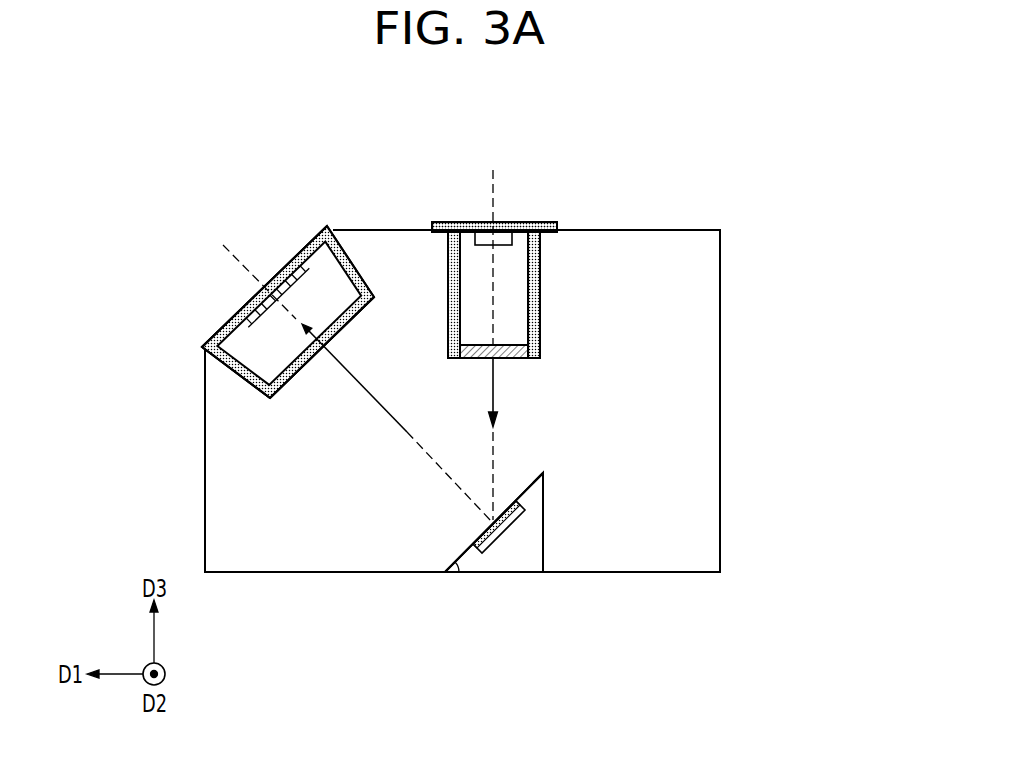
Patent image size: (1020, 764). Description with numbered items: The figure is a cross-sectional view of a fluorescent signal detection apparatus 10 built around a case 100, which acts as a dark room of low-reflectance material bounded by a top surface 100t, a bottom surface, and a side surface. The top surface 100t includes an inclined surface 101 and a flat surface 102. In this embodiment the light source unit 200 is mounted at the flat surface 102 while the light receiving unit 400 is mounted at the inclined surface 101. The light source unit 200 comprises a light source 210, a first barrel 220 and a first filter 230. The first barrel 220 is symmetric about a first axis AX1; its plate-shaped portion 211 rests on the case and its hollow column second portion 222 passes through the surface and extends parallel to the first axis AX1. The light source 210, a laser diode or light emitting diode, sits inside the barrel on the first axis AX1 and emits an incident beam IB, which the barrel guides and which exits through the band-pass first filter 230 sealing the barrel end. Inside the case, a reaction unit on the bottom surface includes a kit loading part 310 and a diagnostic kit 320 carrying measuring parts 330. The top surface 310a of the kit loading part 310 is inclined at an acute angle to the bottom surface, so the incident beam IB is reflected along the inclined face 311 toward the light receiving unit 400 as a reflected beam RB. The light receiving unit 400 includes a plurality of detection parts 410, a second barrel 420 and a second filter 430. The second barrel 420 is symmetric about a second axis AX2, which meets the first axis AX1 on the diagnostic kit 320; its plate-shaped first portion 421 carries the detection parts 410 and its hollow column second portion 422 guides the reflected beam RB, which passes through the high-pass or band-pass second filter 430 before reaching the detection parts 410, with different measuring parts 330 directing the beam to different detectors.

The fluorescent signal detection apparatus 10 is at (727, 100).
The case 100 is at (730, 412).
The top surface 100t is at (390, 155).
The inclined surface 101 is at (345, 230).
The flat surface 102 is at (365, 230).
The light source unit 200 is at (551, 285).
The light source 210 is at (482, 248).
The first barrel 220 is at (595, 155).
The first cover portion 211 is at (513, 222).
The second portion 222 is at (535, 222).
The first filter 230 is at (538, 350).
The kit loading part 310 is at (533, 523).
The top surface of the kit loading part 310a is at (523, 474).
The inclined surface of prism 311 is at (531, 527).
The diagnostic kit 320 is at (498, 558).
The measuring parts 330 is at (472, 537).
The light receiving unit 400 is at (264, 416).
The detection parts 410 is at (291, 260).
The second barrel 420 is at (110, 338).
The first portion 421 is at (205, 338).
The second portion 422 is at (247, 373).
The second filter 430 is at (296, 380).
The first axis AX1 is at (493, 197).
The second axis AX2 is at (237, 258).
The incident beam IB is at (496, 383).
The reflected beam RB is at (382, 398).